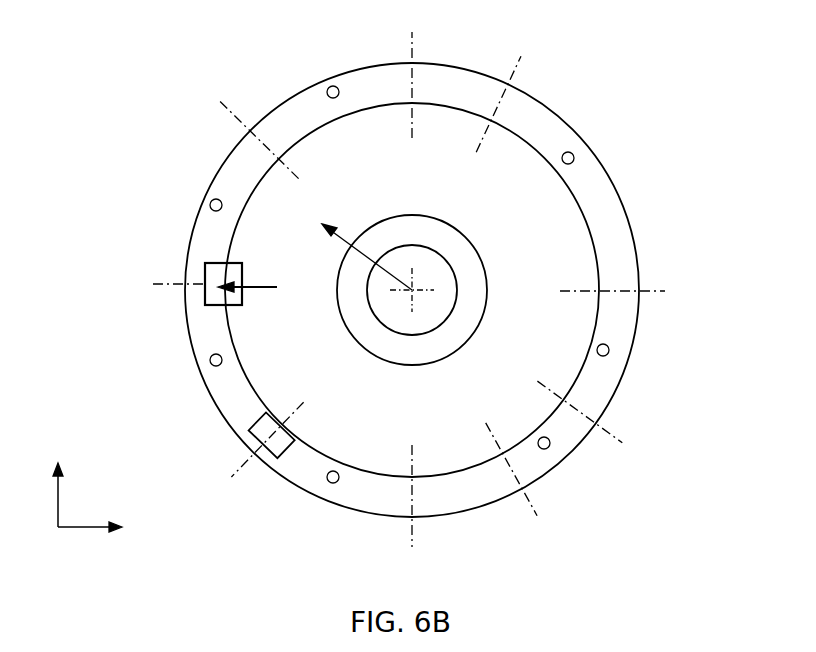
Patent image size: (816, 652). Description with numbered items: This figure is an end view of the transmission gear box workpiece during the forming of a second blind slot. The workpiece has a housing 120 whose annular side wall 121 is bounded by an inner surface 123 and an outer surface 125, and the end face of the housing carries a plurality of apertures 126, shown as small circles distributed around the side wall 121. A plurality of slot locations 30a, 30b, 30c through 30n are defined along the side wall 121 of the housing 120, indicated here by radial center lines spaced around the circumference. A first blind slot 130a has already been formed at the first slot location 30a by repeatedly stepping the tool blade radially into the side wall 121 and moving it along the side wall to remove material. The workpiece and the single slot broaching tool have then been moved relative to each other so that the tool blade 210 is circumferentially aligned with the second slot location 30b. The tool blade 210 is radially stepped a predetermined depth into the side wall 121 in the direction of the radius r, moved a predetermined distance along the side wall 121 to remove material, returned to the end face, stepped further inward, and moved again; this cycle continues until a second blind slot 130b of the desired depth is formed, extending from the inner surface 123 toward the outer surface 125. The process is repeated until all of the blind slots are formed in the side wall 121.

The housing 120 is at (632, 153).
The side wall 121 is at (607, 218).
The inner surface 123 is at (598, 282).
The outer surface 125 is at (638, 270).
The apertures 126 is at (613, 350).
The first slot location 30a is at (210, 451).
The second slot location 30b is at (190, 258).
The third slot location 30c is at (238, 129).
The nth slot location 30n is at (413, 511).
The first blind slot 130a is at (249, 437).
The second blind slot 130b is at (206, 278).
The tool blade 210 is at (238, 275).